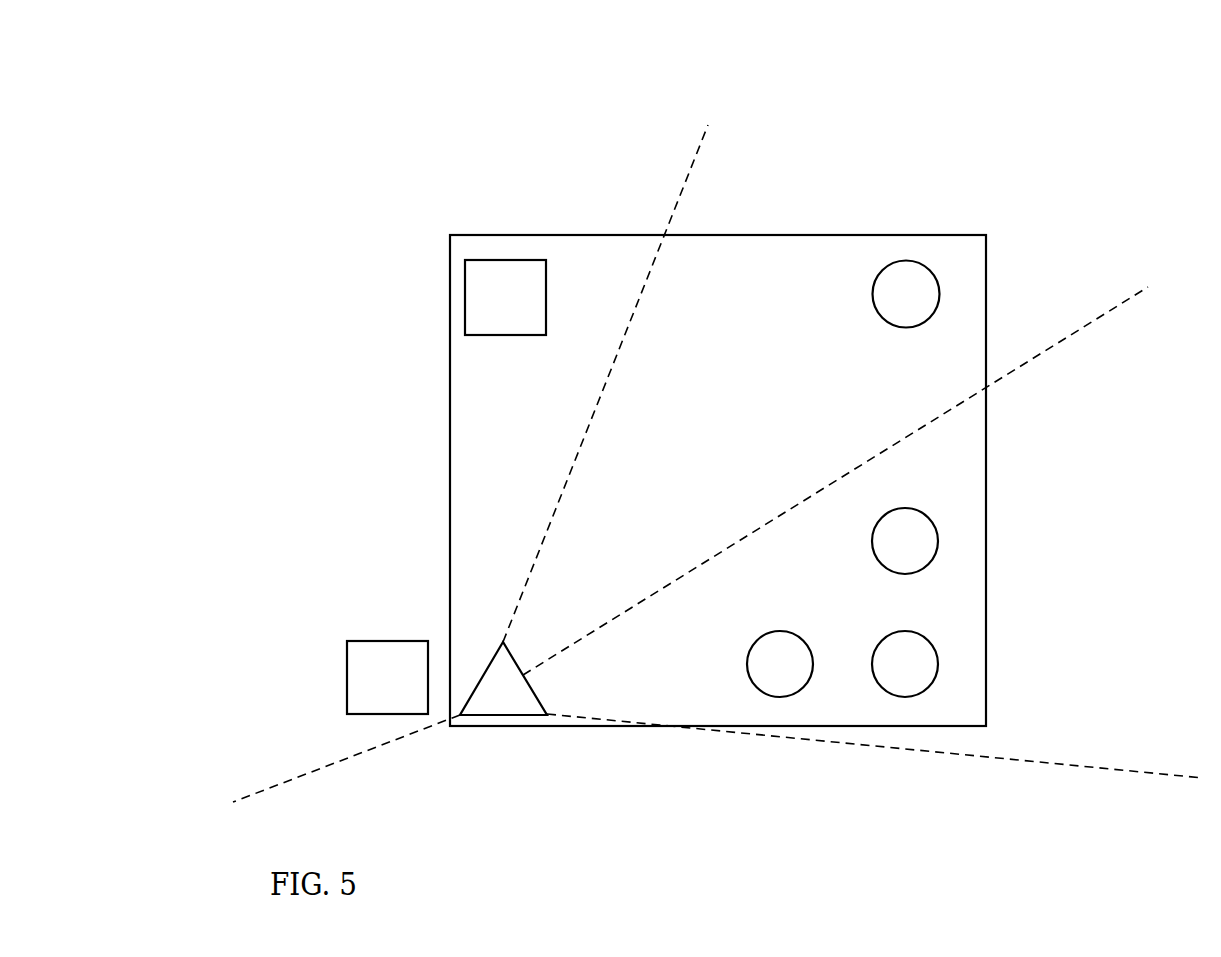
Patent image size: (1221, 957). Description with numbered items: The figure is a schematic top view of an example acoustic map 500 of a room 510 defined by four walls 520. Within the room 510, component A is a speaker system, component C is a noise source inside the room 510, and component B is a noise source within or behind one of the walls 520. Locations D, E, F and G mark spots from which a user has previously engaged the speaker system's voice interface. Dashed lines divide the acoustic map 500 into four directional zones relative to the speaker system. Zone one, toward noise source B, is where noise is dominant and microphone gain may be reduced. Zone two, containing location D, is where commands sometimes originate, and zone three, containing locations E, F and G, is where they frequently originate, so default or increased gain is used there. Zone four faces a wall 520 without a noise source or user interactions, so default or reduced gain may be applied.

The acoustic map 500 is at (381, 119).
The room 510 is at (806, 296).
The walls 520 is at (450, 318).